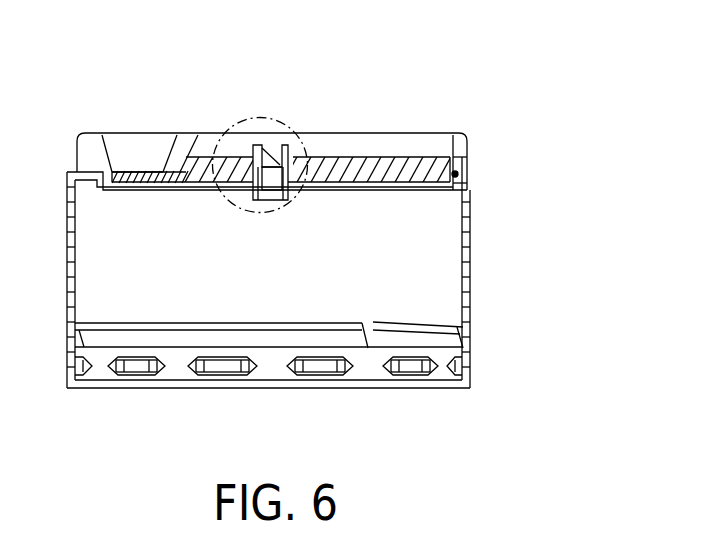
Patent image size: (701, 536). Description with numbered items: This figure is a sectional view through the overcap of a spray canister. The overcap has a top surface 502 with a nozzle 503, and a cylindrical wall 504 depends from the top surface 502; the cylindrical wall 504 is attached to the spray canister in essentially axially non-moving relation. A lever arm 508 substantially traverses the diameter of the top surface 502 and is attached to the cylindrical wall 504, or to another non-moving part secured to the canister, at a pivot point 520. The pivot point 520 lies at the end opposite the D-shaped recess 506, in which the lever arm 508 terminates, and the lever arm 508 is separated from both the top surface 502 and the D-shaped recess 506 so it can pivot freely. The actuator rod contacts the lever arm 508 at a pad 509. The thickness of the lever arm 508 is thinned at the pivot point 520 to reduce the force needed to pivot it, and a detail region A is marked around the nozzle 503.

The top surface 502 is at (358, 133).
The nozzle 503 is at (277, 149).
The cylindrical wall 504 is at (467, 257).
The D-shaped recess 506 is at (157, 140).
The lever arm 508 is at (425, 160).
The pad 509 is at (118, 172).
The pivot point 520 is at (457, 174).
The detail region A is at (222, 135).